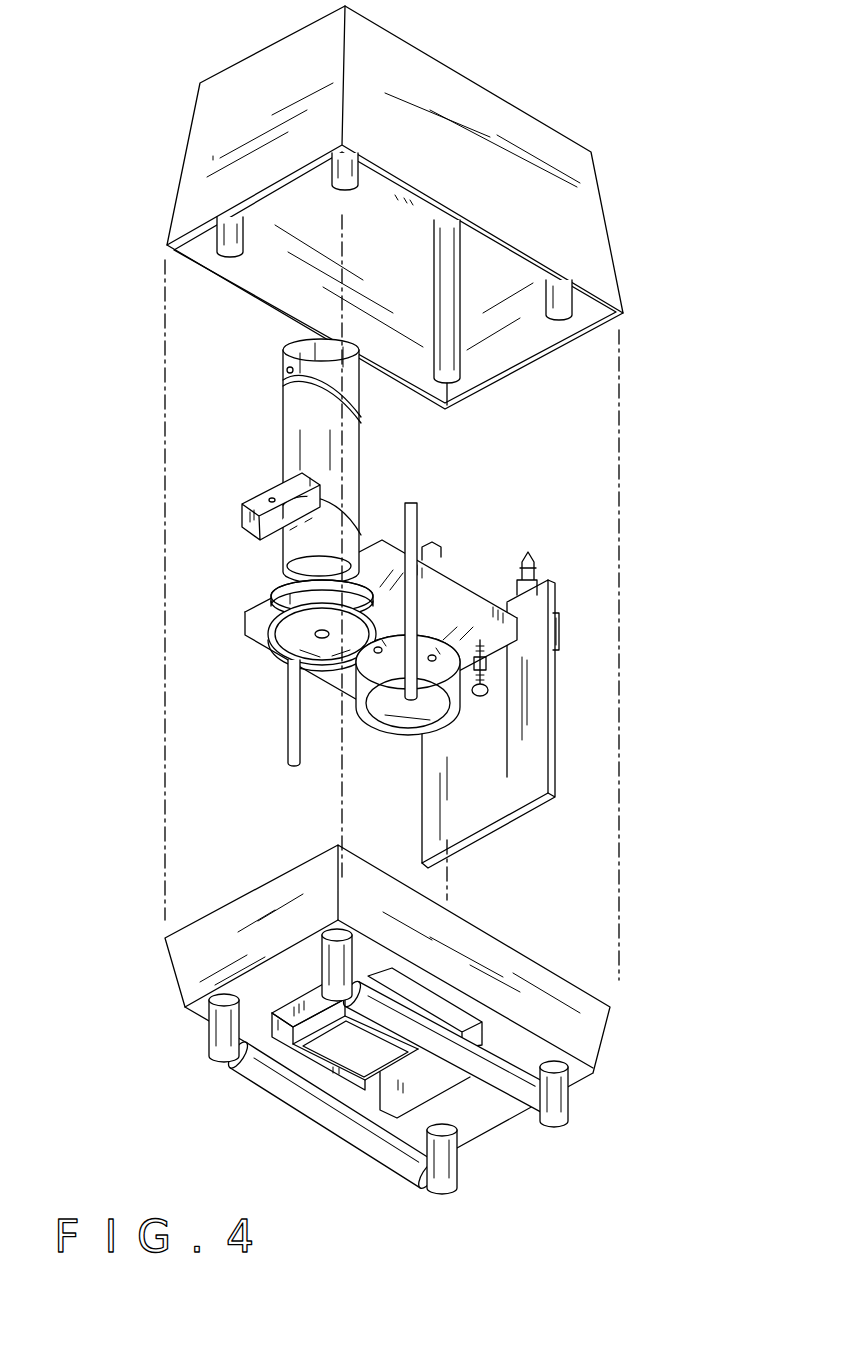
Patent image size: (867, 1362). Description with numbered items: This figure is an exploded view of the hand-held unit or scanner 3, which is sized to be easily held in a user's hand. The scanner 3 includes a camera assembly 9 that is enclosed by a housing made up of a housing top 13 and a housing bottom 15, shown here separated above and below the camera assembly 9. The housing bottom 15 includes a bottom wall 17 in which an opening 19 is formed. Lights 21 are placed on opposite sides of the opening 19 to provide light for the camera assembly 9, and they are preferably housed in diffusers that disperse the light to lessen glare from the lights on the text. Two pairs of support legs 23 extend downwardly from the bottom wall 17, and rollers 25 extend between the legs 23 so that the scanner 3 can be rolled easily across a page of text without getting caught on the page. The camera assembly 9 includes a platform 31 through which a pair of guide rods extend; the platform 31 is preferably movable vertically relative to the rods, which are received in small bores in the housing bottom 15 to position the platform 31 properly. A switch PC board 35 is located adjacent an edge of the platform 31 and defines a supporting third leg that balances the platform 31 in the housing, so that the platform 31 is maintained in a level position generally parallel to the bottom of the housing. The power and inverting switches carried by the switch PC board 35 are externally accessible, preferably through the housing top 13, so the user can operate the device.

The hand-held unit or scanner 3 is at (582, 95).
The camera assembly 9 is at (572, 473).
The housing top 13 is at (417, 42).
The housing bottom 15 is at (503, 940).
The bottom wall 17 is at (270, 970).
The opening 19 is at (432, 1000).
The lights 21 is at (272, 1012).
The support legs 23 is at (332, 953).
The rollers 25 is at (373, 1143).
The platform 31 is at (243, 613).
The switch PC board 35 is at (555, 705).